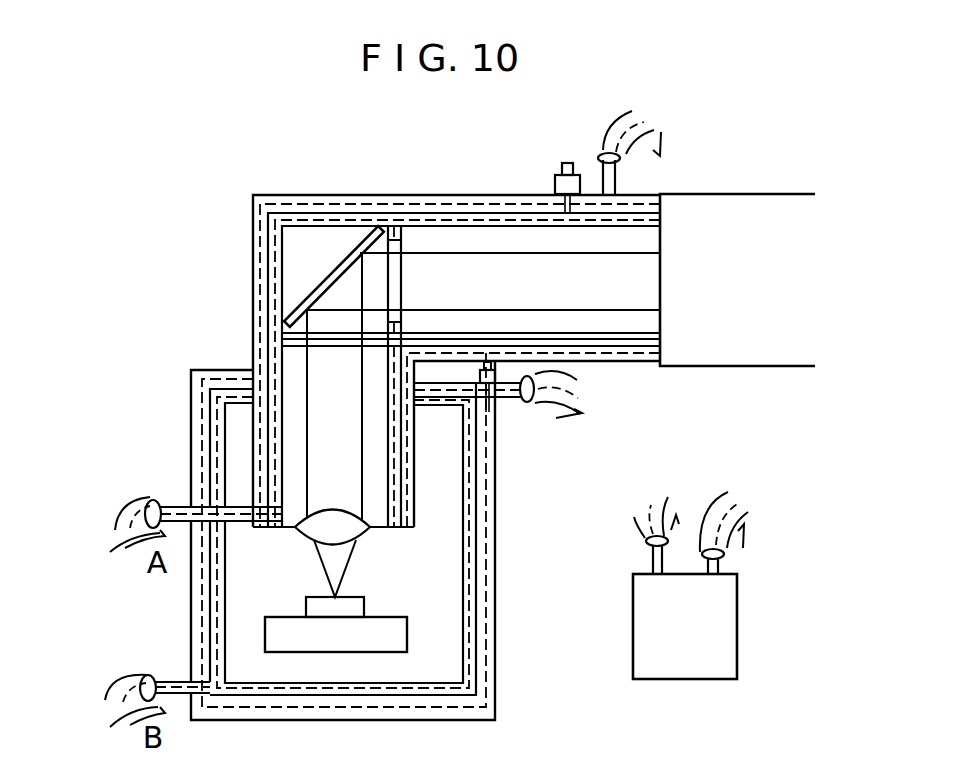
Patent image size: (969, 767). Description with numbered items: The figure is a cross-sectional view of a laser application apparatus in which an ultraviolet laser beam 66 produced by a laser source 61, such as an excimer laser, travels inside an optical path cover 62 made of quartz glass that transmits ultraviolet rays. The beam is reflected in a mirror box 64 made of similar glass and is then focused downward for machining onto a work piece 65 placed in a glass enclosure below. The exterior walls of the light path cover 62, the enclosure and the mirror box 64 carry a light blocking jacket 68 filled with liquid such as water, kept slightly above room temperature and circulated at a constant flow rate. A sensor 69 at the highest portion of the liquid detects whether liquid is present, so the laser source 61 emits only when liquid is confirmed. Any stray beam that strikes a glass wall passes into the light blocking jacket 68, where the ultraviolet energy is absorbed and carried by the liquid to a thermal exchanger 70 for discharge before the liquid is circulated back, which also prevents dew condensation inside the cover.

The laser source 61 is at (768, 205).
The optical path cover 62 is at (455, 337).
The mirror box 64 is at (283, 226).
The work piece 65 is at (350, 607).
The ultraviolet laser beam 66 is at (300, 373).
The light blocking jacket 68 is at (412, 200).
The sensor 69 is at (567, 163).
The thermal exchanger 70 is at (720, 641).